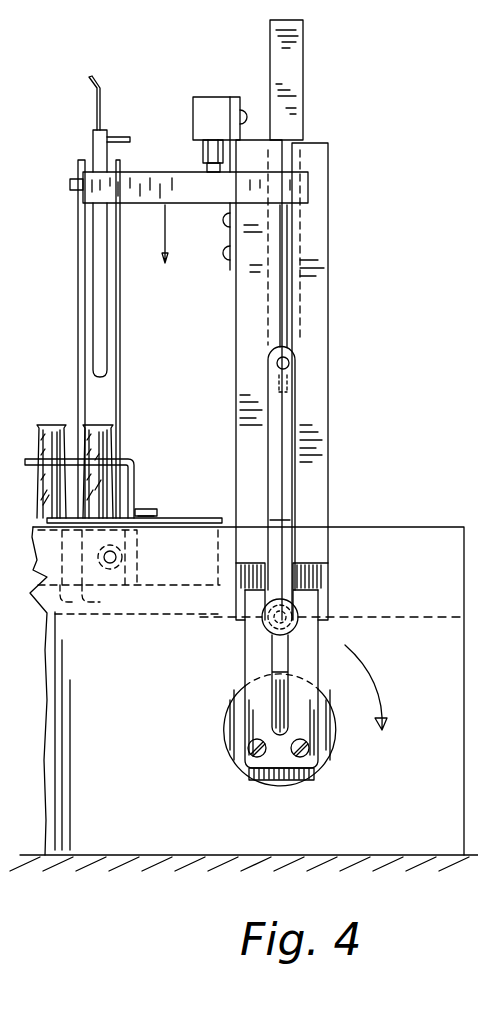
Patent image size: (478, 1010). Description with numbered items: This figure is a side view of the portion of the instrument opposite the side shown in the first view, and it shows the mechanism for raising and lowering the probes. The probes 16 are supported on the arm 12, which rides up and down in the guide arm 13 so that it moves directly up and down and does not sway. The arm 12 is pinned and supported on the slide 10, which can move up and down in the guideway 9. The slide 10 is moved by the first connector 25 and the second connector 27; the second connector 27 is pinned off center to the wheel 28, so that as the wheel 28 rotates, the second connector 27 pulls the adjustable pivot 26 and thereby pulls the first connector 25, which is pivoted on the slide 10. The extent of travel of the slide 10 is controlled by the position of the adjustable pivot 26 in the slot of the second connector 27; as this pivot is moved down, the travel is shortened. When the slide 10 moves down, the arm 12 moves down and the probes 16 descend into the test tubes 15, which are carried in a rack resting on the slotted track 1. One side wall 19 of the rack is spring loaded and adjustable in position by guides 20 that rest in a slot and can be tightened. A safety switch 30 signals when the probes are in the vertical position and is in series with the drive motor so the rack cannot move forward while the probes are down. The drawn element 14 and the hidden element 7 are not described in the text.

The slotted track 1 is at (244, 694).
The hidden block 7 is at (105, 680).
The guideway 9 is at (317, 295).
The slide 10 is at (298, 72).
The arm 12 is at (190, 200).
The guide arm 13 is at (120, 330).
The tube 14 is at (132, 478).
The test tubes 15 is at (105, 435).
The probes 16 is at (95, 287).
The side wall 19 is at (192, 521).
The guides 20 is at (148, 512).
The first connector 25 is at (285, 425).
The adjustable pivot 26 is at (295, 605).
The second connector 27 is at (310, 658).
The wheel 28 is at (335, 745).
The safety switch 30 is at (210, 112).